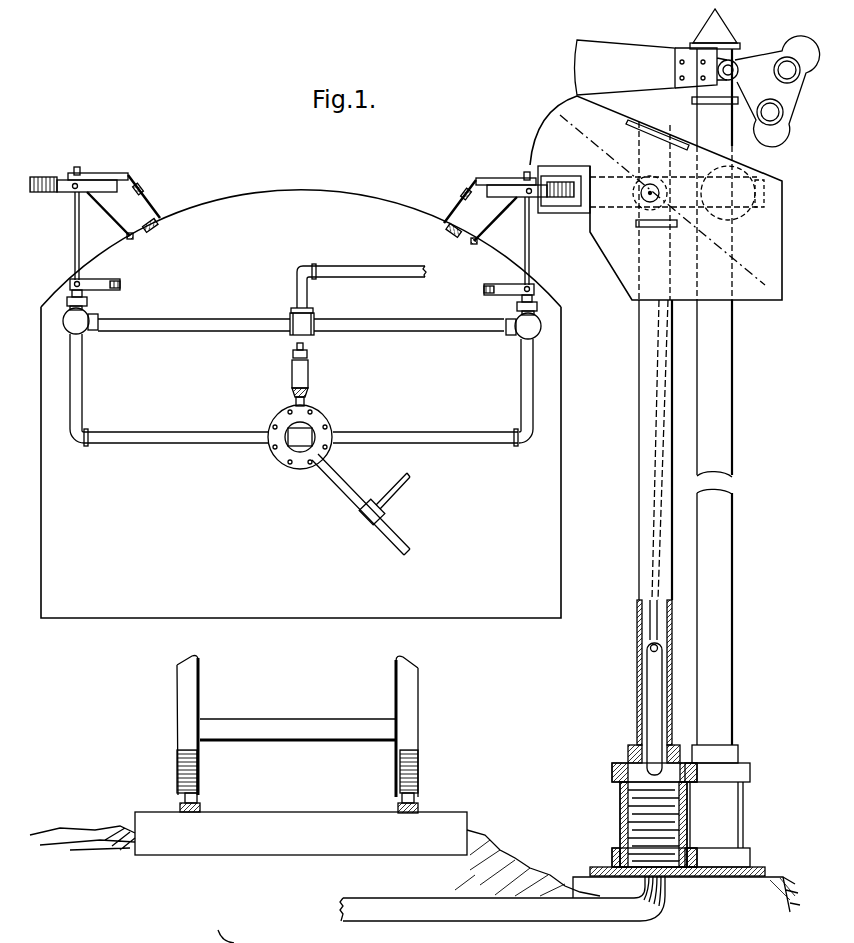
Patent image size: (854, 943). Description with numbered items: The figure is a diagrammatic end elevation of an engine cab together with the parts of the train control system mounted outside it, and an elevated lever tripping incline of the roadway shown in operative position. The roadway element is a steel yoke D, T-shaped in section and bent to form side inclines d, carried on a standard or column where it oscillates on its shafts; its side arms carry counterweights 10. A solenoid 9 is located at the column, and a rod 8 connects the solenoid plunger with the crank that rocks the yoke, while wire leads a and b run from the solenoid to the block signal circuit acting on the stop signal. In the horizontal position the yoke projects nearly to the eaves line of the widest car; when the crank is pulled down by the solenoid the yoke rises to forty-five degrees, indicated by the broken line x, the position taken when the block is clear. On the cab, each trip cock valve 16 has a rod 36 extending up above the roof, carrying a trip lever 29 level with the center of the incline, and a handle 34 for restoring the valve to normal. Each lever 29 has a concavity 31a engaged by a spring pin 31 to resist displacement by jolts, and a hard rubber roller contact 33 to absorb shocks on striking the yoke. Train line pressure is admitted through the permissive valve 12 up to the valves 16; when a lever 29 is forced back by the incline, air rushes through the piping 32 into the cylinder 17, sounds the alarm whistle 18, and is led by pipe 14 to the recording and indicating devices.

The trip lever 29 is at (64, 179).
The spring pin 31 is at (102, 178).
The concavity 31a is at (302, 209).
The hard rubber roller contact 33 is at (36, 193).
The rod 36 is at (75, 227).
The handle 34 is at (103, 281).
The trip cock valve 16 is at (88, 314).
The piping 32 is at (256, 433).
The cylinder 17 is at (314, 404).
The alarm whistle 18 is at (309, 376).
The pipe 14 is at (387, 504).
The permissive valve 12 is at (378, 263).
The counterweight 10 is at (735, 176).
The rod 8 is at (655, 446).
The solenoid 9 is at (622, 797).
The wire lead a is at (644, 896).
The wire lead b is at (661, 900).
The side incline d is at (552, 176).
The yoke D is at (585, 180).
The broken line x is at (662, 202).